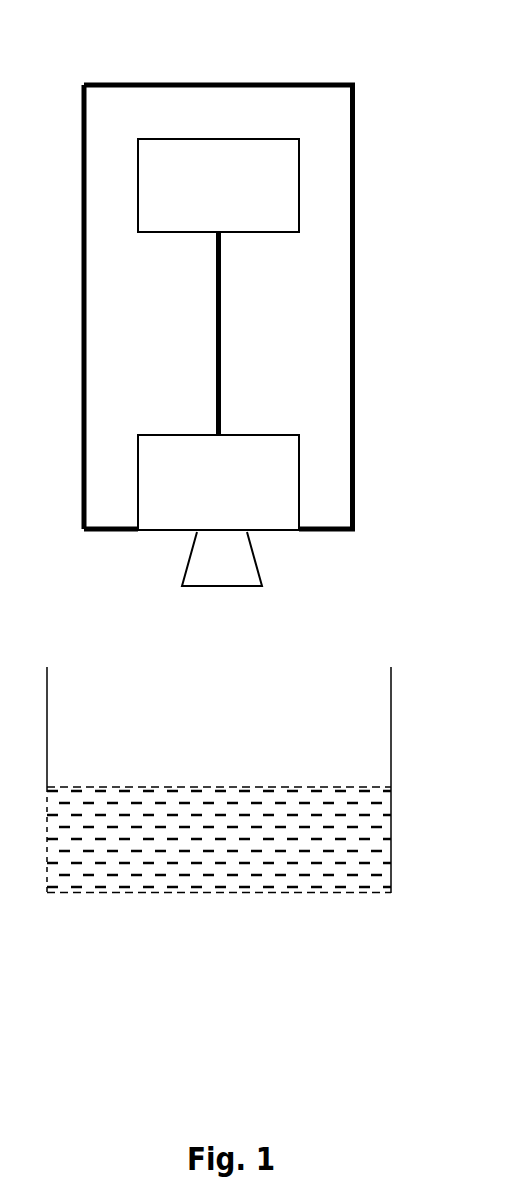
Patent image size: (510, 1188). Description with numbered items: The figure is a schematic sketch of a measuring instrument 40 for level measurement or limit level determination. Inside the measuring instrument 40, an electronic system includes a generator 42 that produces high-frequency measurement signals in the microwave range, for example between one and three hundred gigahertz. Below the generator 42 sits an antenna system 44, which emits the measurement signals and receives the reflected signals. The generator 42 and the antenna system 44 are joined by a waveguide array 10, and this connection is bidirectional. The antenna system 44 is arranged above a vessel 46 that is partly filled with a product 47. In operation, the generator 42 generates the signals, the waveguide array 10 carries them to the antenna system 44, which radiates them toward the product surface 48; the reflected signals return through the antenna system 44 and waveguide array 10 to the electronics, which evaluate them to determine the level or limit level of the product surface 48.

The measuring instrument 40 is at (288, 83).
The generator 42 is at (235, 202).
The waveguide array 10 is at (220, 288).
The antenna system 44 is at (235, 496).
The vessel 46 is at (182, 888).
The product 47 is at (243, 840).
The product surface 48 is at (126, 785).